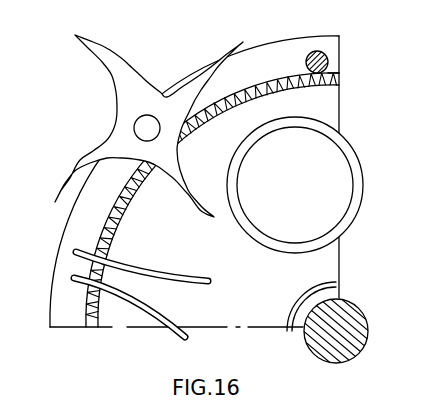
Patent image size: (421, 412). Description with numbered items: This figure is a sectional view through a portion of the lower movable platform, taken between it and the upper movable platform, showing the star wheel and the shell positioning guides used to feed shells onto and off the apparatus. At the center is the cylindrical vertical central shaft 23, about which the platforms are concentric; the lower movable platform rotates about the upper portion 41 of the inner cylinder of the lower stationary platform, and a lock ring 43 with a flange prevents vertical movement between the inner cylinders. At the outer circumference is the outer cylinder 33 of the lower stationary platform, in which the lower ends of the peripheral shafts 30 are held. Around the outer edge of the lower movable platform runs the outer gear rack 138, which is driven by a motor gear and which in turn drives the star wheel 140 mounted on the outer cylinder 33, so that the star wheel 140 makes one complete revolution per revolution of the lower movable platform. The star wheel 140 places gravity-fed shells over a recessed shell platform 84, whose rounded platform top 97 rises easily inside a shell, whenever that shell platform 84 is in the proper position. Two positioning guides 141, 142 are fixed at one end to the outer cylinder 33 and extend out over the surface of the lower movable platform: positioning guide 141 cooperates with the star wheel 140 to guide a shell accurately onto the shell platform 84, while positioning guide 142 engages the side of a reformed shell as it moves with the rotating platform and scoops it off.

The outer cylinder 33 is at (66, 227).
The lock ring 43 is at (295, 322).
The outer gear rack 138 is at (268, 82).
The peripheral shaft 30 is at (311, 51).
The star wheel 140 is at (133, 96).
The shell platform 84 is at (337, 219).
The platform top 97 is at (327, 147).
The upper portion of the inner cylinder 41 is at (339, 297).
The central shaft 23 is at (366, 322).
The positioning guide 141 is at (76, 254).
The positioning guide 142 is at (118, 300).